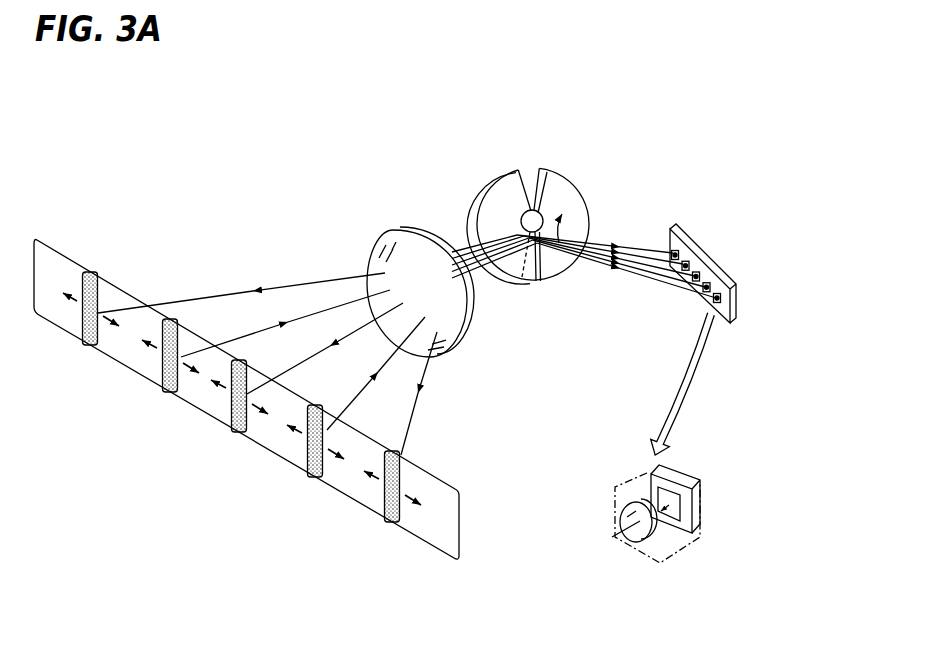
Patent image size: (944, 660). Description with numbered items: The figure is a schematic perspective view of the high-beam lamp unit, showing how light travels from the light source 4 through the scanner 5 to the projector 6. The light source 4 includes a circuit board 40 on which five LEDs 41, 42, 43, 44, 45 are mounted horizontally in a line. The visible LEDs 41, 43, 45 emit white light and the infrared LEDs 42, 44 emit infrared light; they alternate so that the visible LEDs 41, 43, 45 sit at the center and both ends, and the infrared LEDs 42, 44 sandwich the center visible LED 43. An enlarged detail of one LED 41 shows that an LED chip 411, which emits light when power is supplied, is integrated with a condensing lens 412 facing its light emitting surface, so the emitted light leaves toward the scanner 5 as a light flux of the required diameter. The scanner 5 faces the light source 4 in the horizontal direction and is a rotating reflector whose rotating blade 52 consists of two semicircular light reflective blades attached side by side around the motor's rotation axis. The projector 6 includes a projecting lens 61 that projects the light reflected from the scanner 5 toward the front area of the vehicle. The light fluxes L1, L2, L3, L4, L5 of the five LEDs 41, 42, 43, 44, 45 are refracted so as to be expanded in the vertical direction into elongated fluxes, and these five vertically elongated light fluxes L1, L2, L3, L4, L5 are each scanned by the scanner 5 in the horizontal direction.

The light source 4 is at (696, 190).
The scanner 5 is at (480, 162).
The projector 6 is at (381, 229).
The circuit board 40 is at (730, 323).
The visible LED 41 is at (719, 294).
The infrared LED 42 is at (708, 283).
The visible LED 43 is at (698, 271).
The infrared LED 44 is at (686, 261).
The visible LED 45 is at (672, 252).
The rotating blade 52 is at (551, 183).
The projecting lens 61 is at (457, 343).
The LED chip 411 is at (687, 537).
The condensing lens 412 is at (625, 543).
The light flux L1 is at (383, 521).
The light flux L2 is at (307, 477).
The light flux L3 is at (232, 437).
The light flux L4 is at (162, 393).
The light flux L5 is at (88, 343).